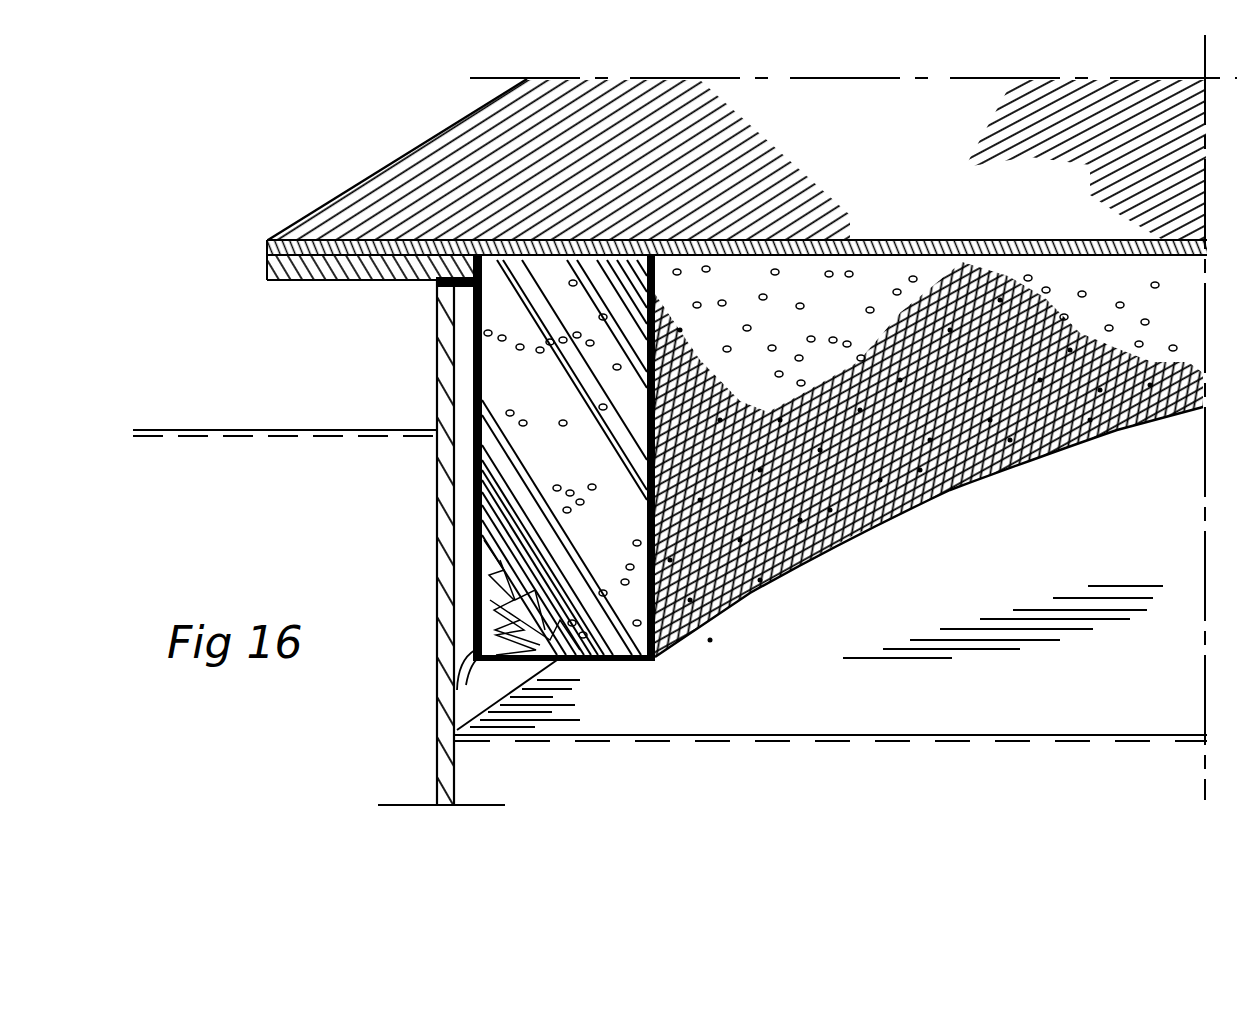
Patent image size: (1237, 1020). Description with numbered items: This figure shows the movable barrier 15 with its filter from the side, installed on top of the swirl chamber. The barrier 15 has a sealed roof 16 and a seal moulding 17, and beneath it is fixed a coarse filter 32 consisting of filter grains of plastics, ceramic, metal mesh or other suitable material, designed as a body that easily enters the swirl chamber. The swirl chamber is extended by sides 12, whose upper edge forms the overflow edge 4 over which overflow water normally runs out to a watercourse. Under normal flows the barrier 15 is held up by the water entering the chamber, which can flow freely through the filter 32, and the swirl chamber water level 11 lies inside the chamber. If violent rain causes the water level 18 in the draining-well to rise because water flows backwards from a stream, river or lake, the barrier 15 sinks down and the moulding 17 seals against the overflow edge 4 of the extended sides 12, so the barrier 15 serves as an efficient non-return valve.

The movable barrier 15 is at (737, 159).
The sludge screen sealed roof 16 is at (563, 140).
The sludge screen seal moulding 17 is at (267, 280).
The overflow edge 4 is at (432, 281).
The water level in draining-well 18 is at (255, 430).
The swirl chamber extended sides 12 is at (445, 545).
The filter 32 is at (599, 661).
The swirl chamber water level 11 is at (975, 737).